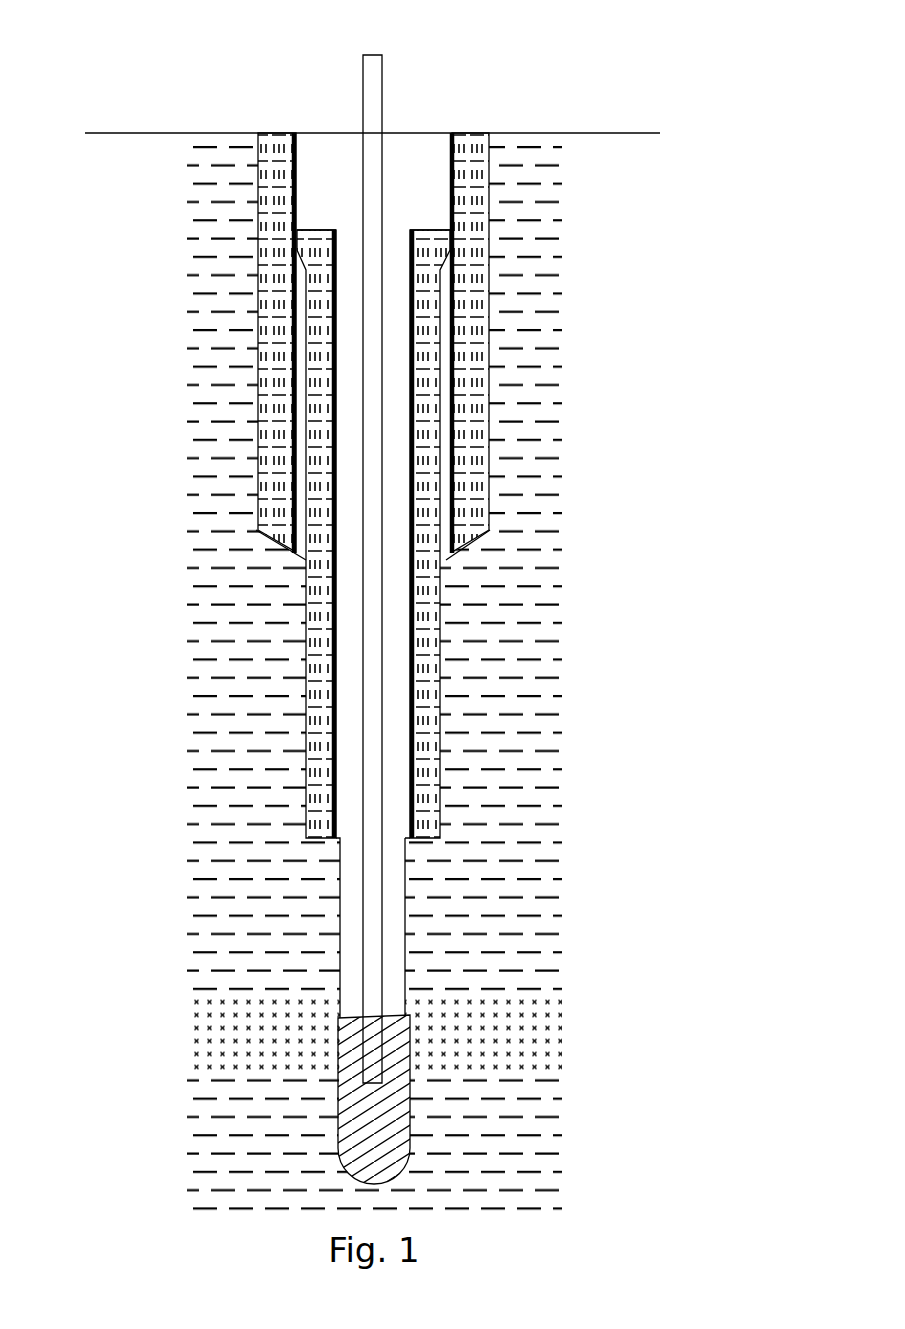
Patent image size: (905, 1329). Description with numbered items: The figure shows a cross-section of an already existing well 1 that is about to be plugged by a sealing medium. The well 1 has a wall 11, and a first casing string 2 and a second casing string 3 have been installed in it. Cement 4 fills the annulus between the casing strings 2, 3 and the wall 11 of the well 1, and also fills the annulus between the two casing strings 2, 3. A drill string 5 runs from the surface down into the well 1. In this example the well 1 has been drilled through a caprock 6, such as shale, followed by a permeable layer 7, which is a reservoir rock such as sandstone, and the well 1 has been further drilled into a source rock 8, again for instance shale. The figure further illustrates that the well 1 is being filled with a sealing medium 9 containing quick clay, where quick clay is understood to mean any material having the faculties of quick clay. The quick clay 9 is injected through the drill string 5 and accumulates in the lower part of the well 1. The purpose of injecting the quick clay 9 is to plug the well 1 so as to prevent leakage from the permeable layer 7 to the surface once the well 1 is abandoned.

The well 1 is at (412, 195).
The first casing string 2 is at (293, 197).
The second casing string 3 is at (408, 311).
The cement 4 is at (490, 257).
The drill string 5 is at (373, 707).
The caprock 6 is at (495, 597).
The permeable layer 7 is at (450, 1045).
The source rock 8 is at (480, 1160).
The sealing medium 9 is at (340, 1115).
The wall 11 is at (283, 150).